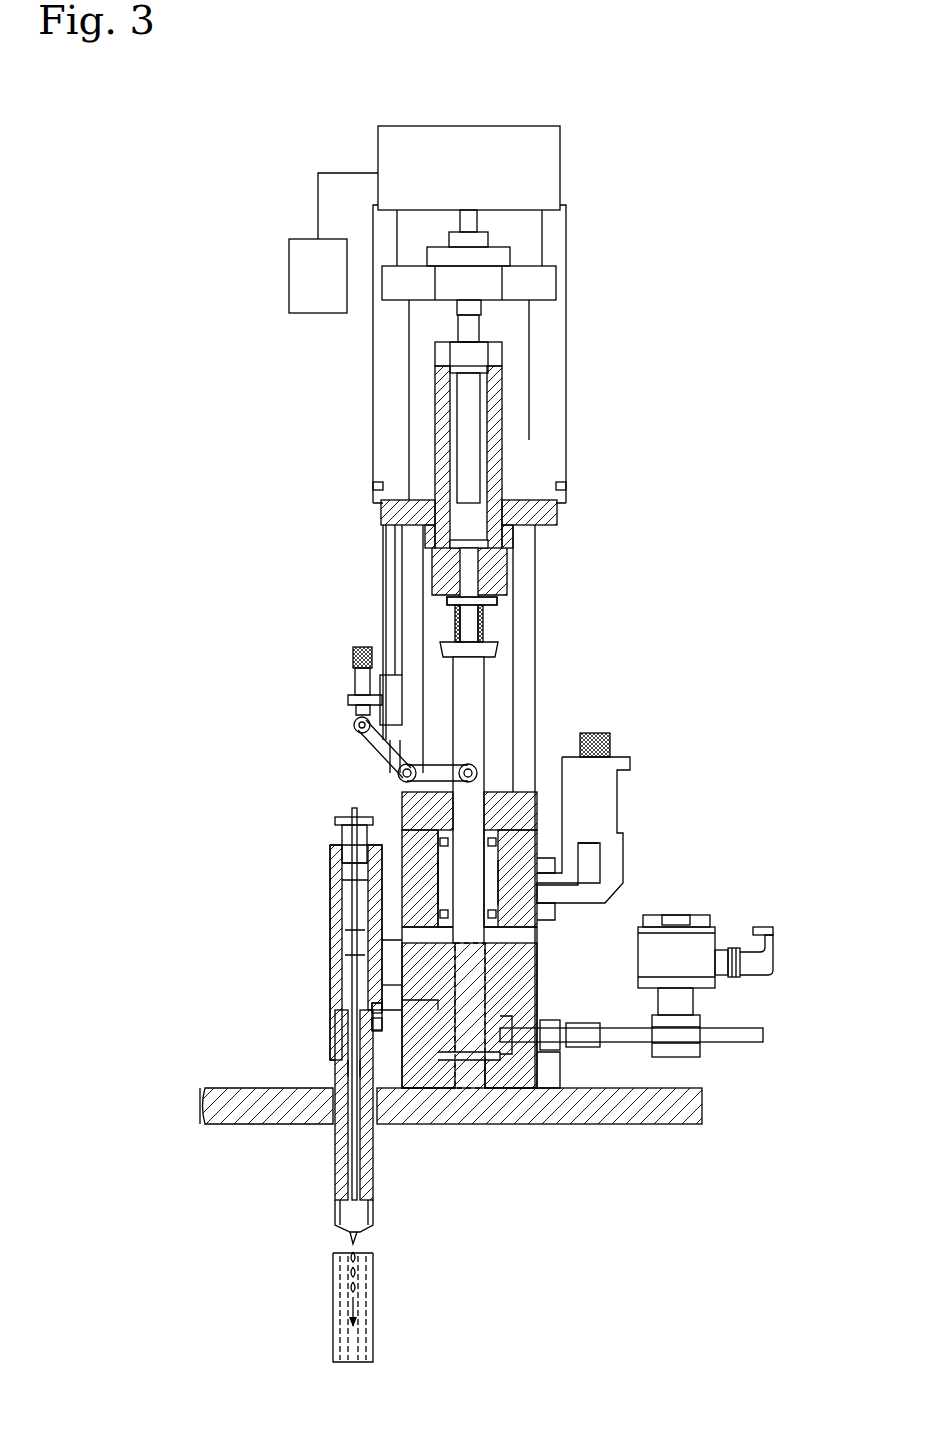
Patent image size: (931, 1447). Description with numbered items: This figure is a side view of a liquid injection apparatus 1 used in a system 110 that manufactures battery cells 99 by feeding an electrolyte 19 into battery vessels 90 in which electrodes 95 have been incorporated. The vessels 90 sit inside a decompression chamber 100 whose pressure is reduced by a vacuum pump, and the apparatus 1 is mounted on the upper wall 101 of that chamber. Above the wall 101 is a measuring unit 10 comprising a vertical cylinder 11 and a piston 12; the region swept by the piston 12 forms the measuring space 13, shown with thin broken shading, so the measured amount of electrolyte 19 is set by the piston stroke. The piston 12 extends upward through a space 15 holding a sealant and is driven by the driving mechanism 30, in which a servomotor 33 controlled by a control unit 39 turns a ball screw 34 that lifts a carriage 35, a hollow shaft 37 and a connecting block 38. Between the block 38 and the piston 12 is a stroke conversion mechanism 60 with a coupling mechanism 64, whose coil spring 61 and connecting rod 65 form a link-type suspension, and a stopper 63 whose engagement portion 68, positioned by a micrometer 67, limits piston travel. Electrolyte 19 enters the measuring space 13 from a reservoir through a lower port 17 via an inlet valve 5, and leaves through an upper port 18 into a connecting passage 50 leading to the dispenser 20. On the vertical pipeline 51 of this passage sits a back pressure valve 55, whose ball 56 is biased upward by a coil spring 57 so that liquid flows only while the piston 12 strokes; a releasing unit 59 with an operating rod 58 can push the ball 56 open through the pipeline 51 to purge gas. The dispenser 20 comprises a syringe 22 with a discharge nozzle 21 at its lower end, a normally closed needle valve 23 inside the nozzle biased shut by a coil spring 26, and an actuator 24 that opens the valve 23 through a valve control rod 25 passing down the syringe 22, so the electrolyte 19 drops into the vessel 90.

The liquid injection apparatus 1 is at (658, 210).
The inlet valve 5 is at (705, 915).
The measuring unit 10 is at (570, 958).
The cylinder 11 is at (537, 986).
The piston 12 is at (467, 803).
The measuring space 13 is at (472, 1013).
The space 15 is at (567, 855).
The port 17 is at (473, 1048).
The port 18 is at (430, 1003).
The electrolyte 19 is at (776, 1035).
The dispenser 20 is at (310, 975).
The discharge nozzle 21 is at (348, 1242).
The syringe 22 is at (338, 1150).
The needle valve 23 is at (352, 1212).
The actuator 24 is at (337, 830).
The valve control rod 25 is at (355, 1078).
The biasing means 26 is at (348, 886).
The driving mechanism 30 is at (612, 345).
The servomotor 33 is at (383, 150).
The ball screw 34 is at (470, 429).
The carriage 35 is at (496, 352).
The hollow shaft 37 is at (496, 480).
The connecting block 38 is at (502, 582).
The control unit 39 is at (300, 262).
The connecting passage 50 is at (413, 972).
The pipeline 51 is at (405, 990).
The back pressure valve 55 is at (170, 1030).
The ball 56 is at (377, 1008).
The coil spring 57 is at (377, 1023).
The operating rod 58 is at (400, 778).
The releasing unit 59 is at (380, 606).
The stroke conversion mechanism 60 is at (568, 626).
The coil spring 61 is at (486, 612).
The stopper 63 is at (312, 720).
The coupling mechanism 64 is at (503, 605).
The connecting rod 65 is at (470, 623).
The position control mechanism 67 is at (348, 676).
The engagement portion 68 is at (487, 772).
The battery vessel 90 is at (376, 1307).
The electrodes 95 is at (361, 1347).
The battery cell 99 is at (330, 1310).
The decompression chamber 100 is at (562, 1184).
The upper wall 101 is at (655, 1126).
The system 110 is at (158, 1000).